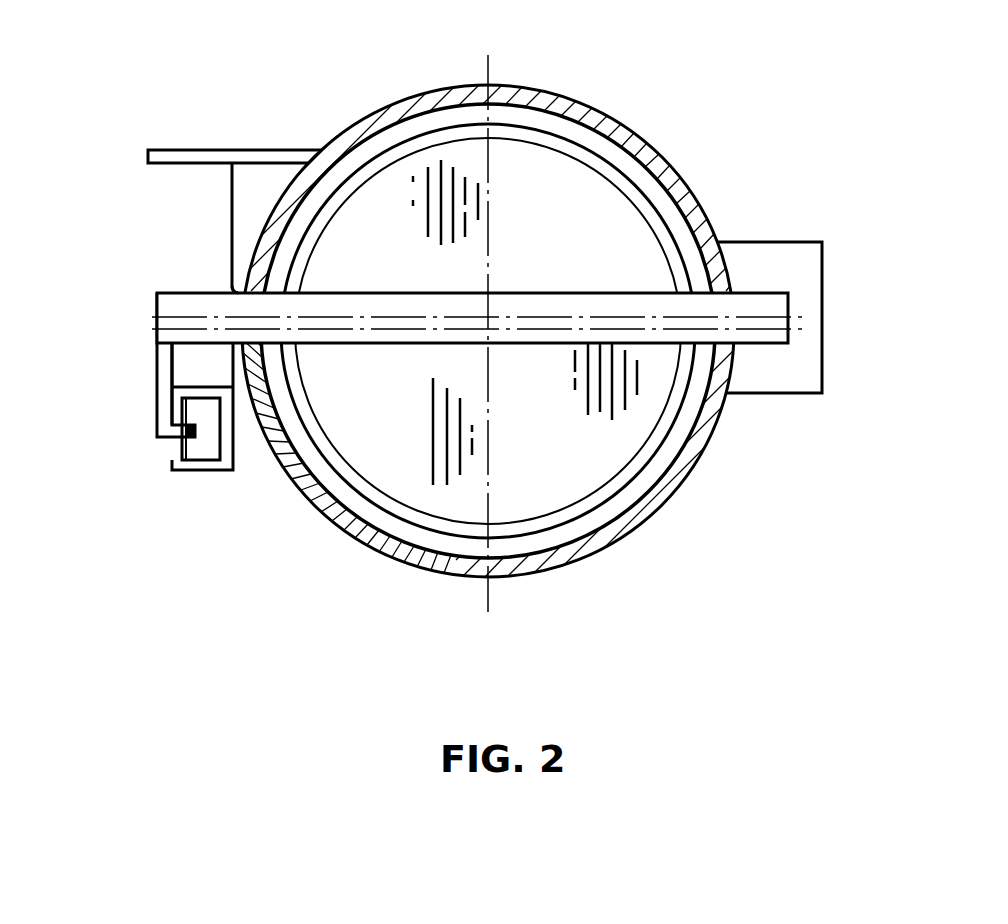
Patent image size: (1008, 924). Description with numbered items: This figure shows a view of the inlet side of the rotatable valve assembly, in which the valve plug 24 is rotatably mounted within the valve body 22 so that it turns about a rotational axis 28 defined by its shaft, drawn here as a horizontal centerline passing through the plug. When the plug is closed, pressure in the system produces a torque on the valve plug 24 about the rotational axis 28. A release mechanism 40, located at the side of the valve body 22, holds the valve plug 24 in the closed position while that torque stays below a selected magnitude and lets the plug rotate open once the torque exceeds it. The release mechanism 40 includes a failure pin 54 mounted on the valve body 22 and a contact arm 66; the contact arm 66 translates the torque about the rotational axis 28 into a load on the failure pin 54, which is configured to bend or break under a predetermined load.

The valve body 22 is at (368, 121).
The valve plug 24 is at (556, 273).
The rotational axis 28 is at (776, 317).
The release mechanism 40 is at (120, 411).
The failure pin 54 is at (183, 448).
The contact arm 66 is at (160, 372).